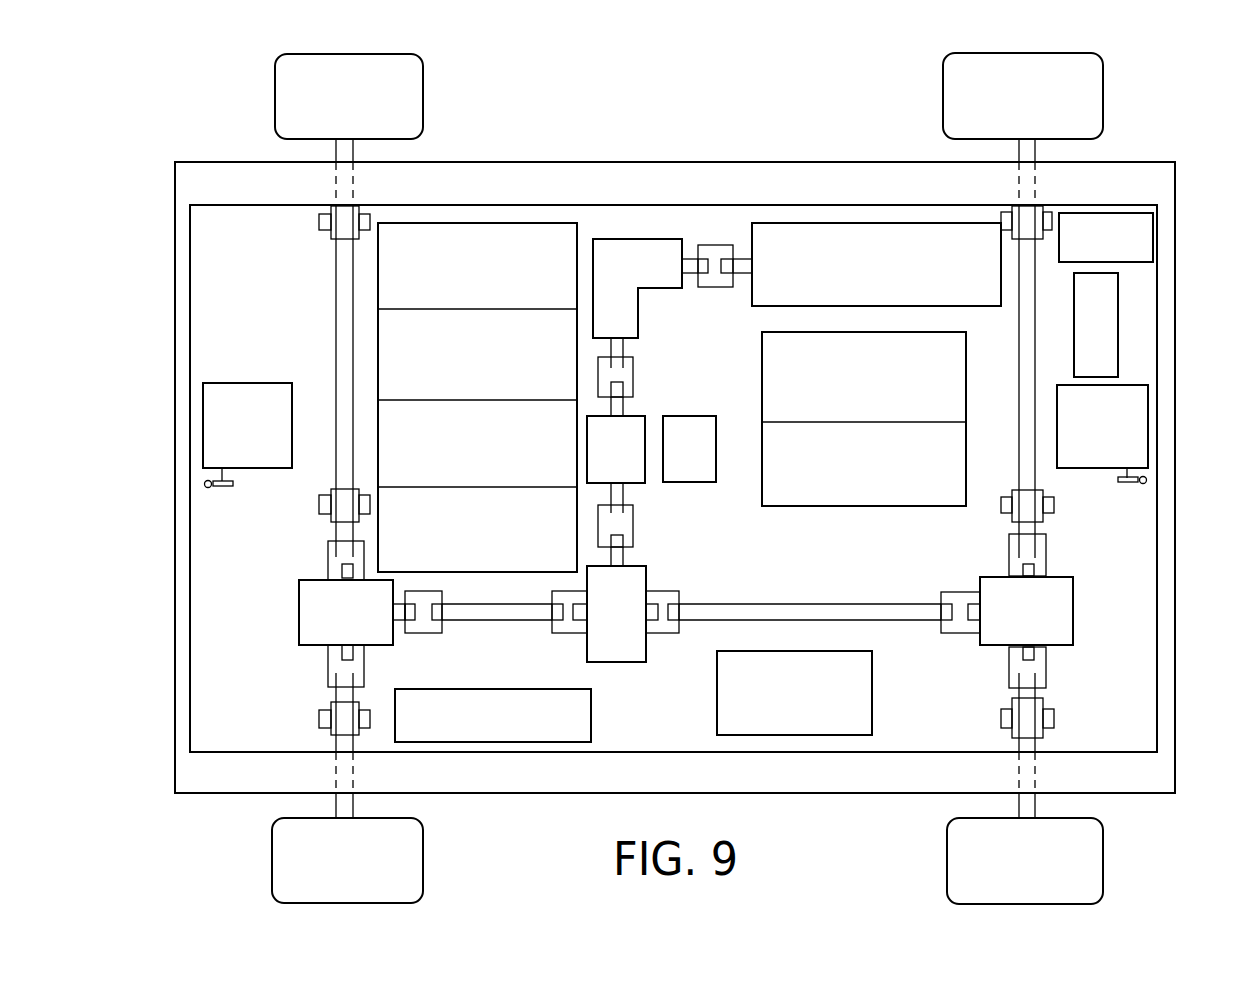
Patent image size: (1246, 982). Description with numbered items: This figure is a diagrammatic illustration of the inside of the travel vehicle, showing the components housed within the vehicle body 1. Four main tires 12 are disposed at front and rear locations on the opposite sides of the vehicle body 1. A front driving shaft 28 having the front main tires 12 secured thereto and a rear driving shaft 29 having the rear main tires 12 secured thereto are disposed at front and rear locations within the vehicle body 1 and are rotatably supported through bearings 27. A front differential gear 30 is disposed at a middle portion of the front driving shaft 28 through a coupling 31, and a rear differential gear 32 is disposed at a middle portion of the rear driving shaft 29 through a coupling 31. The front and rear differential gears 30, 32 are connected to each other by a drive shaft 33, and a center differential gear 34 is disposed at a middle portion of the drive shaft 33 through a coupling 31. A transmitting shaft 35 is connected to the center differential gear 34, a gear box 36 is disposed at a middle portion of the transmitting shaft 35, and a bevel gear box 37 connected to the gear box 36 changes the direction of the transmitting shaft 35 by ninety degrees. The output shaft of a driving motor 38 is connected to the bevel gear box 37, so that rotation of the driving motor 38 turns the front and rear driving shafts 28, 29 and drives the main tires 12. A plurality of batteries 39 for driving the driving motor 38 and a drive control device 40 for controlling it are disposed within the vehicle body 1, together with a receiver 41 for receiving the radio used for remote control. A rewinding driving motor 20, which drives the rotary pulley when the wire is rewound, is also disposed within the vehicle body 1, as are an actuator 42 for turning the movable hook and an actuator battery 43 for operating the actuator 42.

The vehicle body 1 is at (738, 167).
The main tires 12 is at (410, 105).
The rewinding driving motor 20 is at (708, 423).
The bearings 27 is at (319, 223).
The front driving shaft 28 is at (1018, 411).
The rear driving shaft 29 is at (345, 347).
The front differential gear 30 is at (1058, 582).
The coupling 31 is at (366, 662).
The rear differential gear 32 is at (307, 628).
The drive shaft 33 is at (798, 605).
The center differential gear 34 is at (640, 657).
The transmitting shaft 35 is at (625, 493).
The gear box 36 is at (637, 422).
The bevel gear box 37 is at (640, 313).
The driving motor 38 is at (777, 287).
The batteries 39 is at (566, 232).
The drive control device 40 is at (865, 702).
The receiver 41 is at (1143, 239).
The actuator 42 is at (245, 460).
The actuator battery 43 is at (1112, 343).